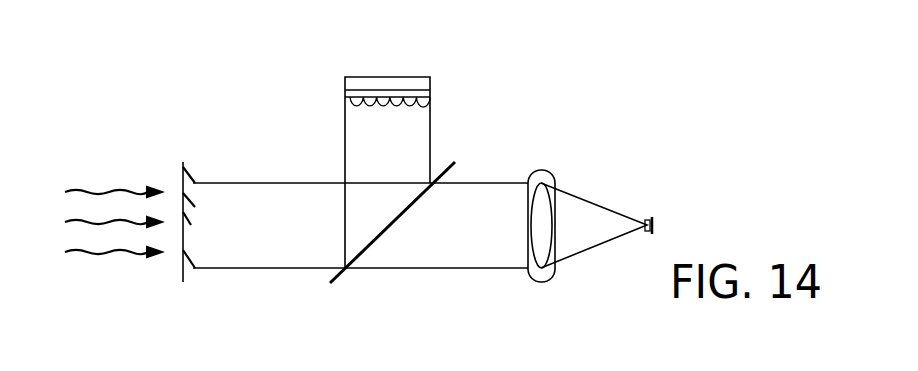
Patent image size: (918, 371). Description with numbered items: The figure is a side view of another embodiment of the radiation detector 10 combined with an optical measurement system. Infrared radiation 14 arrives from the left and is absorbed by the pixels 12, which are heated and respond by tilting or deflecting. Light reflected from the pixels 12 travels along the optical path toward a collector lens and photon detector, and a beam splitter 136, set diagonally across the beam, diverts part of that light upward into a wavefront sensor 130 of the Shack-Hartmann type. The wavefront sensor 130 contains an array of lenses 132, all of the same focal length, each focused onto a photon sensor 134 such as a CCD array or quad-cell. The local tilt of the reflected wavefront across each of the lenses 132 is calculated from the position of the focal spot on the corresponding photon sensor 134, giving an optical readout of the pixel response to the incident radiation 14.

The electromagnetic radiation detector 10 is at (202, 140).
The pixels 12 is at (194, 286).
The infrared radiation 14 is at (108, 163).
The wavefront sensor 130 is at (395, 153).
The lenses 132 is at (433, 92).
The photon sensor 134 is at (433, 82).
The beam splitter 136 is at (385, 235).